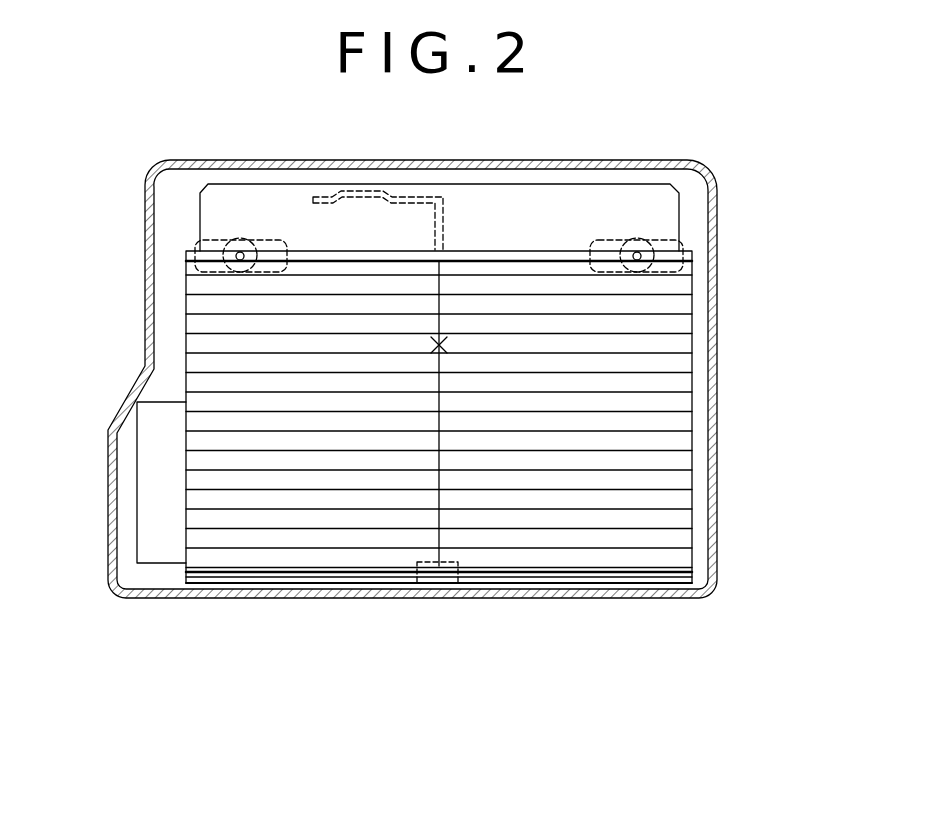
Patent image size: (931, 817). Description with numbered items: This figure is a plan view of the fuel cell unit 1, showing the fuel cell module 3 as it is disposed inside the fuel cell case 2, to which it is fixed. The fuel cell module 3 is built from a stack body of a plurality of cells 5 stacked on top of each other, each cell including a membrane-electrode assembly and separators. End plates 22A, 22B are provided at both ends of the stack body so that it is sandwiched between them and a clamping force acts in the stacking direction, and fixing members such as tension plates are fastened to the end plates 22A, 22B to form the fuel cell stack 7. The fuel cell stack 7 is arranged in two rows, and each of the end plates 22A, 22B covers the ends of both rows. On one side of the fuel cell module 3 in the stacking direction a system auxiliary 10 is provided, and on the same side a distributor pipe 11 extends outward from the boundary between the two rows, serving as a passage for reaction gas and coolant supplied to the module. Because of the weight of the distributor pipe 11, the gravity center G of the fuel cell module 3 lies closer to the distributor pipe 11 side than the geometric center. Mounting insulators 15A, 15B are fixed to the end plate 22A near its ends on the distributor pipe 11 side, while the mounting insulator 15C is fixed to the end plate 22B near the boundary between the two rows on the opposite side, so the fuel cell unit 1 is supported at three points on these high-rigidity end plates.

The fuel cell unit 1 is at (757, 263).
The fuel cell case 2 is at (718, 329).
The fuel cell module 3 is at (693, 418).
The cells 5 is at (187, 325).
The fuel cell stack 7 is at (321, 578).
The system auxiliary 10 is at (273, 184).
The distributor pipe 11 is at (410, 195).
The mounting insulator 15A is at (655, 247).
The mounting insulator 15B is at (222, 246).
The mounting insulator 15C is at (446, 577).
The end plate 22A is at (187, 256).
The end plate 22B is at (183, 578).
The gravity center G is at (444, 345).